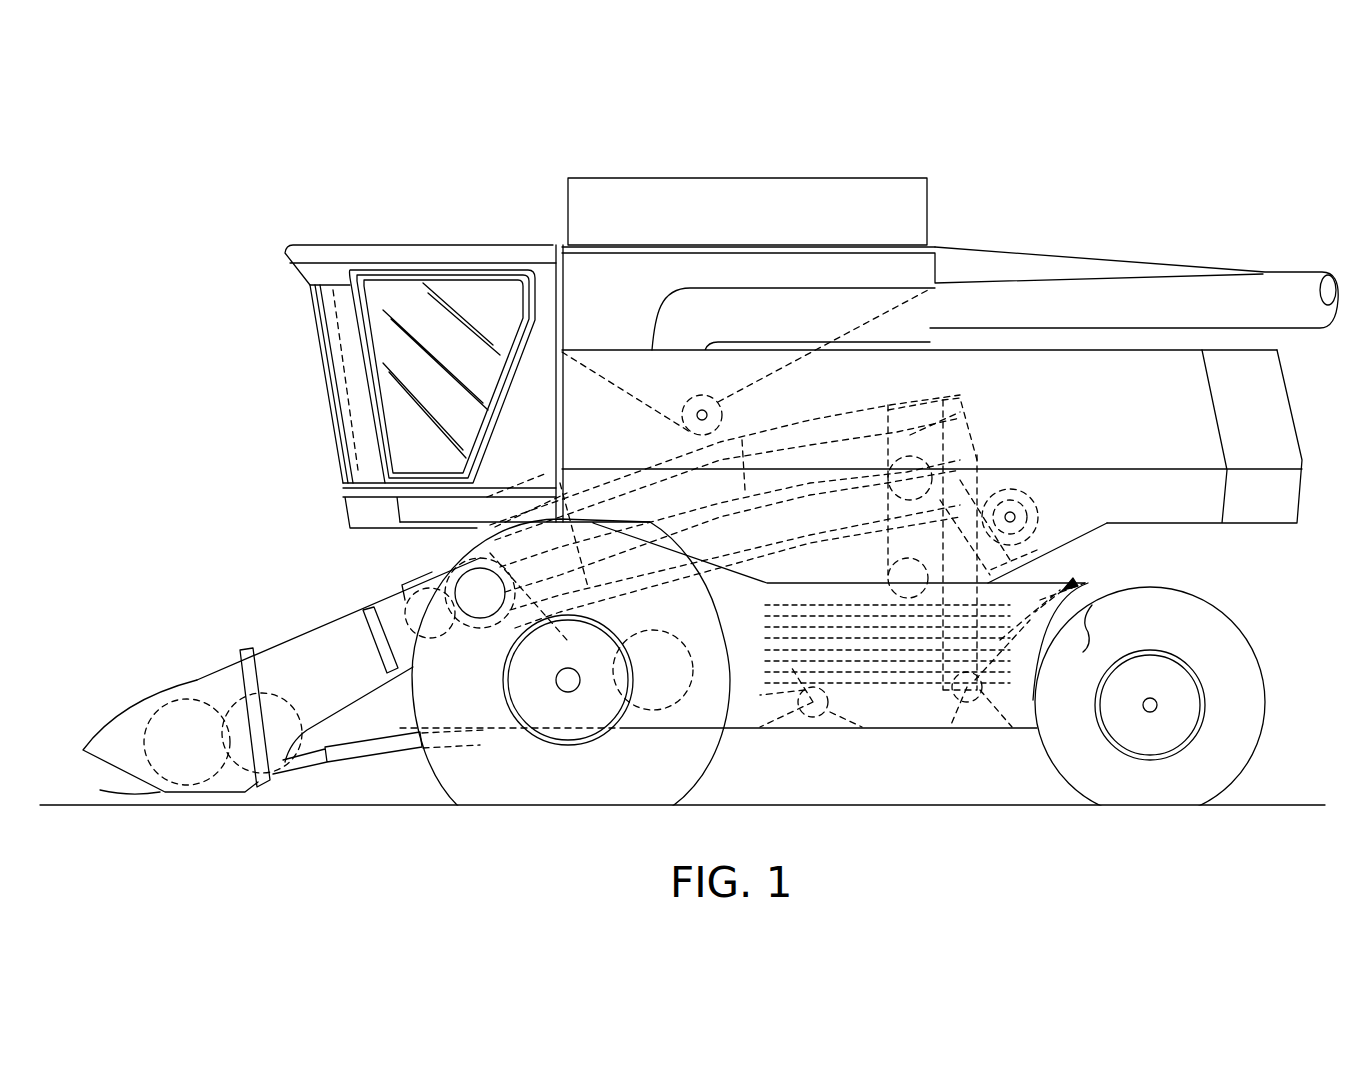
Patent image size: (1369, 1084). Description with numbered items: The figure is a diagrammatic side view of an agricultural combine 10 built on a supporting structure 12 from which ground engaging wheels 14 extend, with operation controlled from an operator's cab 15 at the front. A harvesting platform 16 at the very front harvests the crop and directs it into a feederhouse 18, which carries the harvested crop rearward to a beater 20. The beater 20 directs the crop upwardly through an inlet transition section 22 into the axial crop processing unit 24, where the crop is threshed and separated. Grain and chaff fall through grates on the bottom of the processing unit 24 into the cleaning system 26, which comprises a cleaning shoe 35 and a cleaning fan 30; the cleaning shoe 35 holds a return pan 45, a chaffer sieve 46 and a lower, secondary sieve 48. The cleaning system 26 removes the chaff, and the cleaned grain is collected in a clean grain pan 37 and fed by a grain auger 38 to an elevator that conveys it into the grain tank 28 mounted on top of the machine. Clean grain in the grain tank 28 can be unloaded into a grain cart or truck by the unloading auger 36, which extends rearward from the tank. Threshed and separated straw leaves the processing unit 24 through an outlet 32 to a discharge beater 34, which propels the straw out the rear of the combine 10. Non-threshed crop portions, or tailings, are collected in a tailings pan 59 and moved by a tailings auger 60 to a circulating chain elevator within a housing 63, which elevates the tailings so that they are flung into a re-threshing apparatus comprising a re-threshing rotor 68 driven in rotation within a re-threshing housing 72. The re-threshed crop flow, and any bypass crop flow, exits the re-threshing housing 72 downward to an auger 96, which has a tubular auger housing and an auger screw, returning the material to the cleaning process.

The agricultural combine 10 is at (1066, 166).
The supporting structure 12 is at (790, 728).
The ground engaging wheels 14 is at (690, 783).
The operator's cab 15 is at (328, 388).
The harvesting platform 16 is at (196, 680).
The feederhouse 18 is at (318, 632).
The beater 20 is at (452, 565).
The inlet transition section 22 is at (854, 687).
The axial crop processing unit 24 is at (823, 410).
The cleaning system 26 is at (1075, 577).
The grain tank 28 is at (721, 226).
The cleaning fan 30 is at (652, 720).
The outlet 32 is at (1003, 480).
The discharge beater 34 is at (1040, 505).
The cleaning shoe 35 is at (1078, 641).
The unloading auger 36 is at (1313, 270).
The clean grain pan 37 is at (755, 727).
The grain auger 38 is at (866, 728).
The return pan 45 is at (1059, 581).
The chaffer sieve 46 is at (785, 612).
The secondary sieve 48 is at (805, 655).
The tailings pan 59 is at (1015, 728).
The tailings auger 60 is at (953, 728).
The housing 63 is at (1060, 540).
The re-threshing rotor 68 is at (950, 420).
The re-threshing housing 72 is at (900, 405).
The auger 96 is at (890, 572).